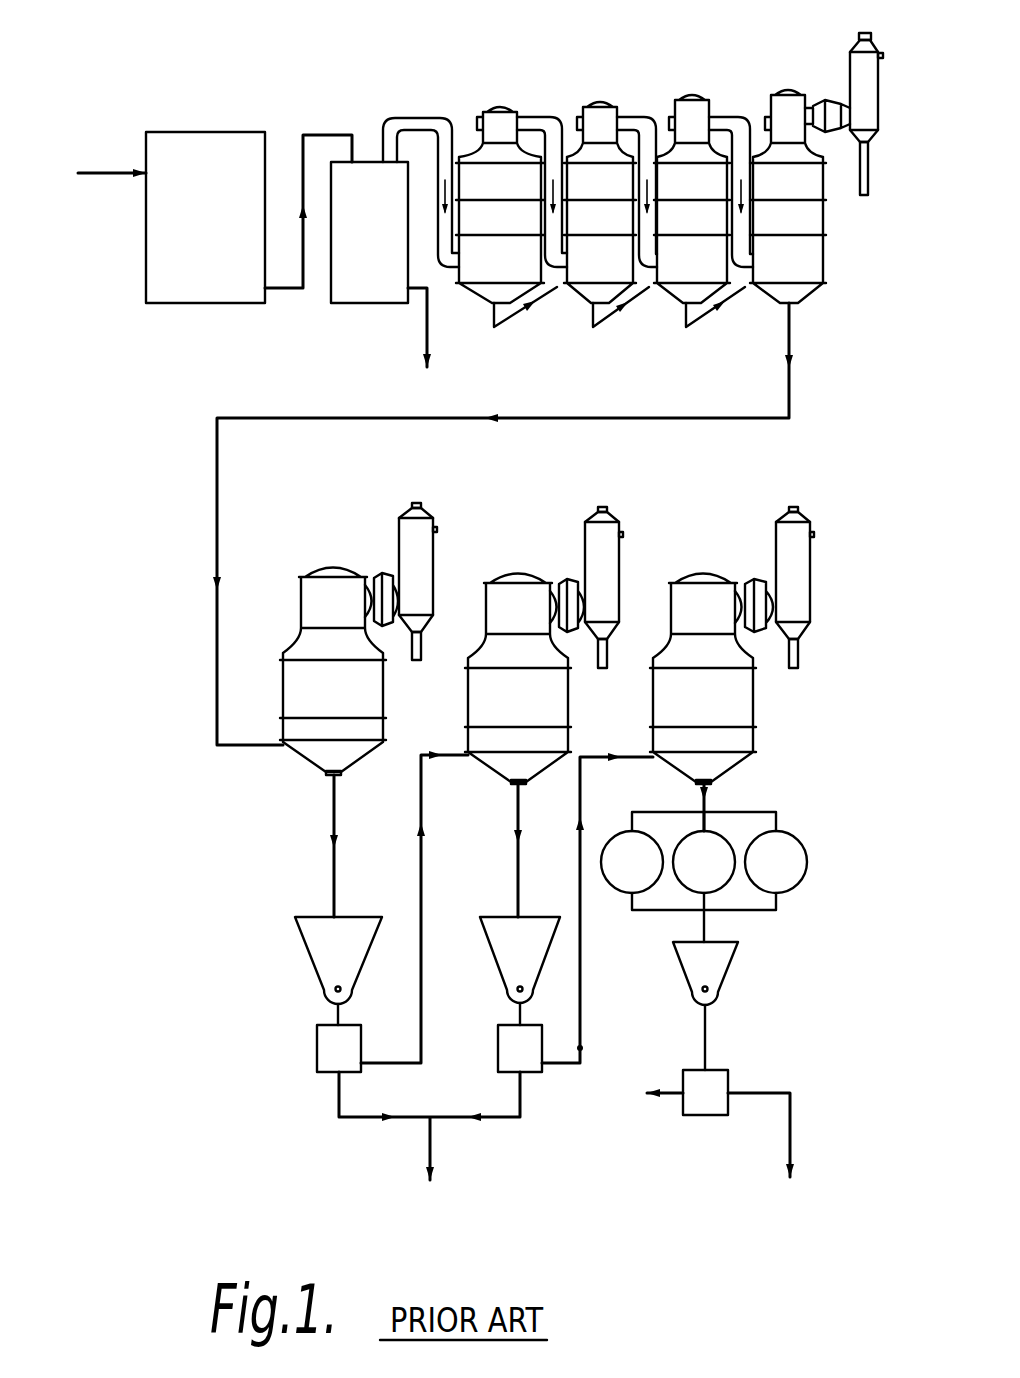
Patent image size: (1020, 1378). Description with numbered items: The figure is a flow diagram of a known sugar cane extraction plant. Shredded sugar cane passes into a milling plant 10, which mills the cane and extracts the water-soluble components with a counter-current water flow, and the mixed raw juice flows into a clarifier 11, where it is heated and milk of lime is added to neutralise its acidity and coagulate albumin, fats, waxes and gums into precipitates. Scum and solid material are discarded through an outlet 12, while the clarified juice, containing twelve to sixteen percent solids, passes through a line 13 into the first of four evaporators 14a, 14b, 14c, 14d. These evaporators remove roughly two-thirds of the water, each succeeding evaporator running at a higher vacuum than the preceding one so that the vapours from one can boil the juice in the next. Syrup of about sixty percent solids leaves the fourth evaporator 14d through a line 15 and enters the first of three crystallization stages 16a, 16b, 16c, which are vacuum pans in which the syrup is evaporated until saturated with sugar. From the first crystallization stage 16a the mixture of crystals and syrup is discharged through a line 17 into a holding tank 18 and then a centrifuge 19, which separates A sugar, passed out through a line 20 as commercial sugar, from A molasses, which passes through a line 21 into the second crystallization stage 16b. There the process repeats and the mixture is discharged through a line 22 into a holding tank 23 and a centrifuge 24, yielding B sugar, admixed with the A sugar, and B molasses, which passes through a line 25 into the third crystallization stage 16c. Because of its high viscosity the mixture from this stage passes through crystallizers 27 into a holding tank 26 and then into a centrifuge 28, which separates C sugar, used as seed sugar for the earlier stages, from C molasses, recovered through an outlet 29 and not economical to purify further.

The milling plant 10 is at (222, 236).
The clarifier 11 is at (385, 248).
The scum discharge 12 is at (427, 326).
The clarified juice line 13 is at (418, 118).
The first evaporator 14a is at (494, 92).
The second evaporator 14b is at (599, 88).
The third evaporator 14c is at (691, 85).
The fourth evaporator 14d is at (776, 82).
The syrup line 15 is at (793, 388).
The first crystallization stage 16a is at (436, 492).
The second crystallization stage 16b is at (614, 492).
The third crystallization stage 16c is at (798, 492).
The discharge line 17 is at (334, 798).
The holding tank 18 is at (323, 947).
The centrifuge 19 is at (330, 1045).
The A sugar outlet 20 is at (337, 1100).
The A molasses line 21 is at (423, 1010).
The discharge line 22 is at (517, 867).
The holding tank 23 is at (510, 950).
The centrifuge 24 is at (528, 1060).
The B molasses line 25 is at (580, 960).
The holding tank 26 is at (713, 970).
The crystallizers 27 is at (644, 877).
The centrifuge 28 is at (707, 1102).
The C molasses outlet 29 is at (770, 1088).